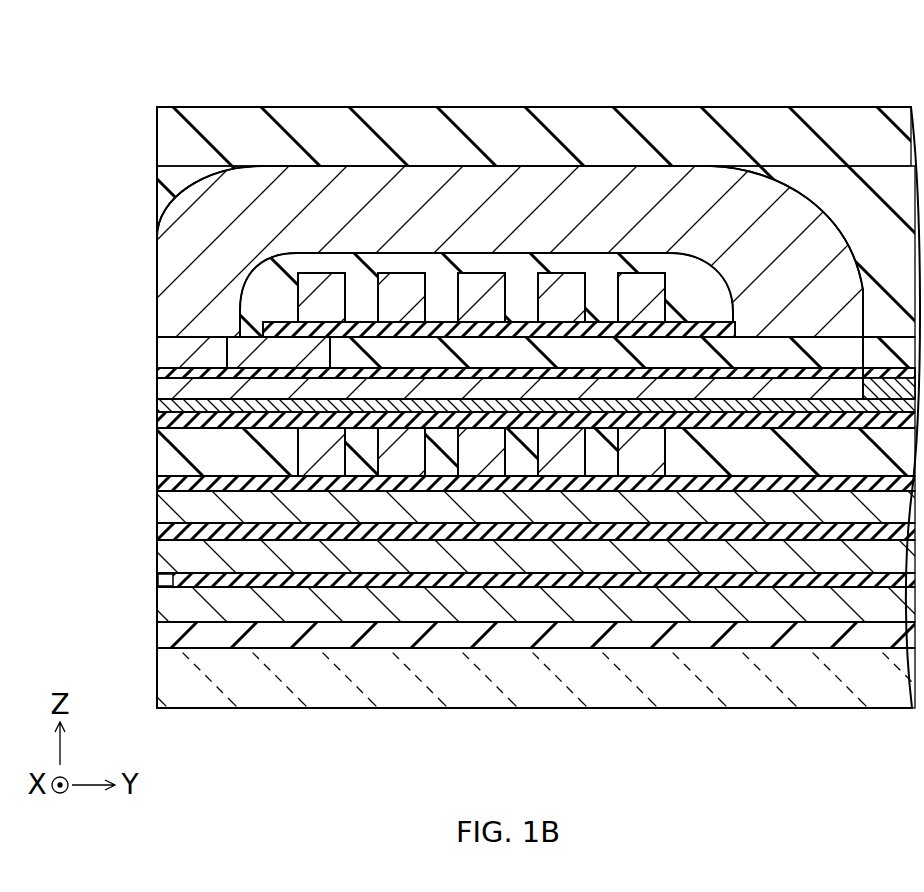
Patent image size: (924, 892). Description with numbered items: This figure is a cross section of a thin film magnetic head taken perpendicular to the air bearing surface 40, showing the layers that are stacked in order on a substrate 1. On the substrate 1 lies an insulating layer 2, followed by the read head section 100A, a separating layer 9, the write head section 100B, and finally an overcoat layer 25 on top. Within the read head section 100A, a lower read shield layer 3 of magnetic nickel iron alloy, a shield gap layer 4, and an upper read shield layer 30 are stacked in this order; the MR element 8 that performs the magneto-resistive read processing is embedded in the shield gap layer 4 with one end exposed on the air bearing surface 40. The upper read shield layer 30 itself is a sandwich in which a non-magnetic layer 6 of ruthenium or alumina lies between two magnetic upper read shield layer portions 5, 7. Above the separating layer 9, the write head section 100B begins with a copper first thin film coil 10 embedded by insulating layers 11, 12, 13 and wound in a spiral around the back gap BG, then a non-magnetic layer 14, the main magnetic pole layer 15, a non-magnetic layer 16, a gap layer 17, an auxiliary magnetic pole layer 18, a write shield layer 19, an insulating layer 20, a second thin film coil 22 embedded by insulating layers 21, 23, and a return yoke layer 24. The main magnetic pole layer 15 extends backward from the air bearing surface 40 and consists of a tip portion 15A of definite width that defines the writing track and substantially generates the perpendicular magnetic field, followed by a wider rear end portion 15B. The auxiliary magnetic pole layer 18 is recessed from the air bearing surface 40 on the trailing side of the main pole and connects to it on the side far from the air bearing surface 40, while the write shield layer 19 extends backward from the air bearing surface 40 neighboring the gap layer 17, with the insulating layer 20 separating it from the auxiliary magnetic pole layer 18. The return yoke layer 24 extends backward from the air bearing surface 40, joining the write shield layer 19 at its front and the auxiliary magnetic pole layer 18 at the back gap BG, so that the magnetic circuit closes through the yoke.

The substrate 1 is at (826, 680).
The insulating layer 2 is at (790, 640).
The lower read shield layer 3 is at (752, 608).
The shield gap layer 4 is at (710, 582).
The upper read shield layer portion 5 is at (666, 560).
The non-magnetic layer 6 is at (620, 535).
The upper read shield layer portion 7 is at (575, 515).
The MR element 8 is at (166, 595).
The separating layer 9 is at (530, 485).
The first thin film coil 10 is at (485, 465).
The insulating layer 11 is at (440, 460).
The insulating layer 12 is at (852, 460).
The insulating layer 13 is at (400, 455).
The non-magnetic layer 14 is at (363, 390).
The main magnetic pole layer 15 is at (499, 170).
The tip portion 15A is at (300, 285).
The rear end portion 15B is at (357, 340).
The non-magnetic layer 16 is at (887, 393).
The gap layer 17 is at (307, 375).
The auxiliary magnetic pole layer 18 is at (487, 345).
The write shield layer 19 is at (177, 350).
The insulating layer 20 is at (256, 350).
The insulating layer 21 is at (635, 332).
The second thin film coil 22 is at (557, 295).
The insulating layer 23 is at (680, 300).
The return yoke layer 24 is at (250, 180).
The overcoat layer 25 is at (873, 130).
The upper read shield layer 30 is at (536, 651).
The air bearing surface 40 is at (140, 168).
The read head section 100A is at (487, 644).
The write head section 100B is at (487, 404).
The back gap BG is at (776, 305).